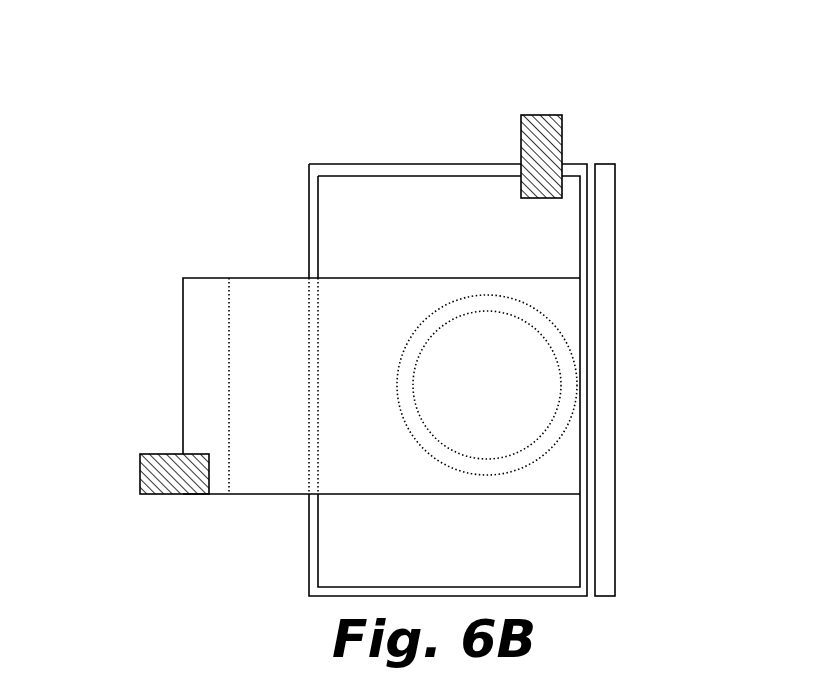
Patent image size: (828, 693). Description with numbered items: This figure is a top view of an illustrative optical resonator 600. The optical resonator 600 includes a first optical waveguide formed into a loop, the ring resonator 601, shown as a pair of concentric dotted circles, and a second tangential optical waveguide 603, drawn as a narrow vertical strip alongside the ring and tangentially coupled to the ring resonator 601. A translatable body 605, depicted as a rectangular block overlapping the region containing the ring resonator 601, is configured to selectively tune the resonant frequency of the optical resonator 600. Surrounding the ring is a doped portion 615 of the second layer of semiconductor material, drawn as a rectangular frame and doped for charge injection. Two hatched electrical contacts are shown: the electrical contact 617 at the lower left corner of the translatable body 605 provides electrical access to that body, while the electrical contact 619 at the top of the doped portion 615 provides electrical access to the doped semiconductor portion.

The optical resonator 600 is at (693, 110).
The ring resonator 601 is at (556, 334).
The tangential optical waveguide 603 is at (615, 389).
The translatable body 605 is at (183, 345).
The doped portion of the second layer of semiconductor material 615 is at (340, 175).
The electrical contact 617 is at (140, 478).
The electrical contact 619 is at (540, 115).